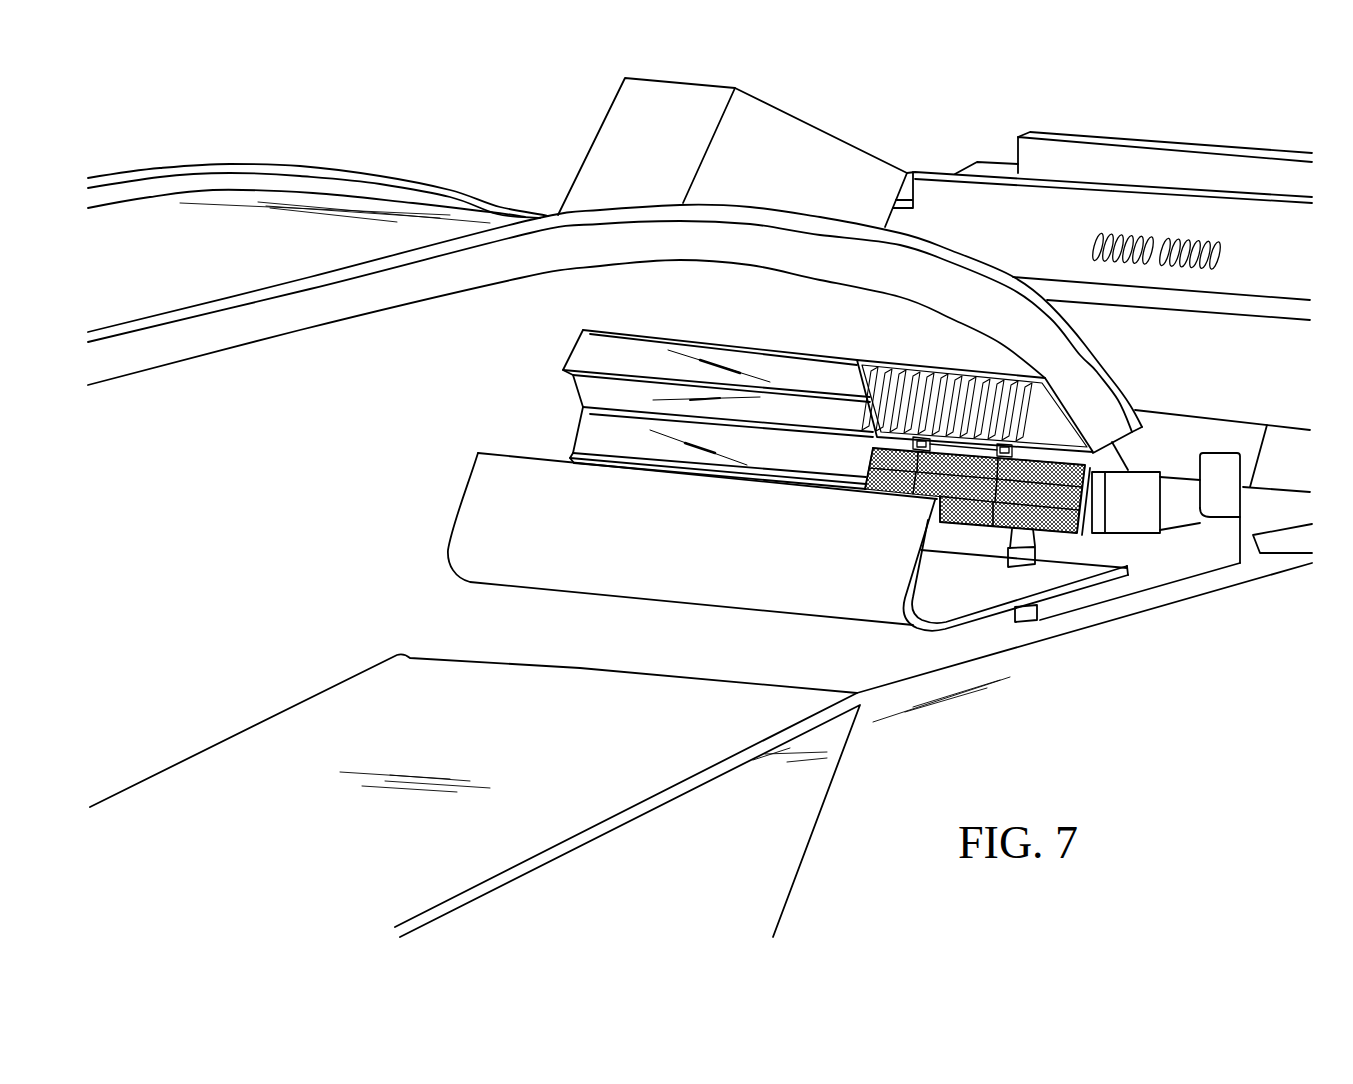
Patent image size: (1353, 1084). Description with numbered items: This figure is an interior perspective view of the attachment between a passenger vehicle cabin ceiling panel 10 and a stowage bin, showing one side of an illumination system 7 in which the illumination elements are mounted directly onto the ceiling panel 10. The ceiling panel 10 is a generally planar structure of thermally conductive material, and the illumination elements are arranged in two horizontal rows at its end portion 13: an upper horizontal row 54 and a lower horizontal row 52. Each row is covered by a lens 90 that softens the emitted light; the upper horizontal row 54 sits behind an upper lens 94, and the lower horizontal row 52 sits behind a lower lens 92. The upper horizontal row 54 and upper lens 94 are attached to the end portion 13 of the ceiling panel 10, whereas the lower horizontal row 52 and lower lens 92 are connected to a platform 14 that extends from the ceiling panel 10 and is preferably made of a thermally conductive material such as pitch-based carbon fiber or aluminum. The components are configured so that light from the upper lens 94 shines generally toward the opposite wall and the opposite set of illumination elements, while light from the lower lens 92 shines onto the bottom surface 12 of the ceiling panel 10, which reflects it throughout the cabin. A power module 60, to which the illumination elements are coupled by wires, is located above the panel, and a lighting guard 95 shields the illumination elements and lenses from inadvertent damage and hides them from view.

The illumination system 7 is at (270, 397).
The ceiling panel 10 is at (363, 337).
The bottom surface 12 is at (558, 289).
The end portion 13 is at (1095, 404).
The platform 14 is at (1090, 540).
The lower horizontal row 52 is at (862, 457).
The upper horizontal row 54 is at (862, 412).
The power module 60 is at (620, 112).
The lens 90 is at (575, 409).
The lower lens 92 is at (578, 440).
The upper lens 94 is at (568, 370).
The lighting guard 95 is at (463, 560).